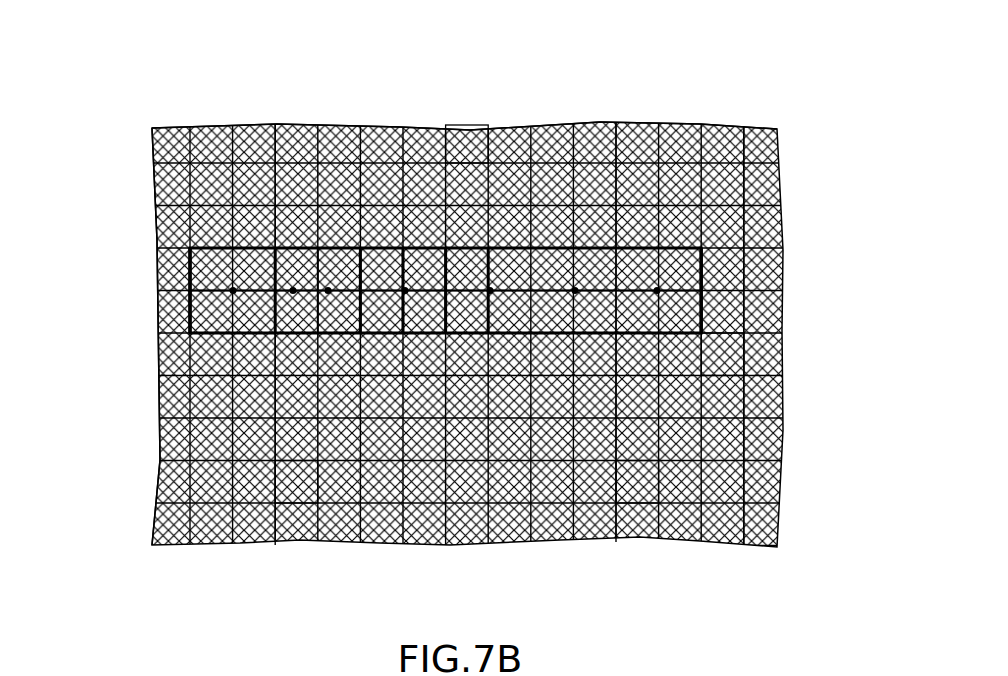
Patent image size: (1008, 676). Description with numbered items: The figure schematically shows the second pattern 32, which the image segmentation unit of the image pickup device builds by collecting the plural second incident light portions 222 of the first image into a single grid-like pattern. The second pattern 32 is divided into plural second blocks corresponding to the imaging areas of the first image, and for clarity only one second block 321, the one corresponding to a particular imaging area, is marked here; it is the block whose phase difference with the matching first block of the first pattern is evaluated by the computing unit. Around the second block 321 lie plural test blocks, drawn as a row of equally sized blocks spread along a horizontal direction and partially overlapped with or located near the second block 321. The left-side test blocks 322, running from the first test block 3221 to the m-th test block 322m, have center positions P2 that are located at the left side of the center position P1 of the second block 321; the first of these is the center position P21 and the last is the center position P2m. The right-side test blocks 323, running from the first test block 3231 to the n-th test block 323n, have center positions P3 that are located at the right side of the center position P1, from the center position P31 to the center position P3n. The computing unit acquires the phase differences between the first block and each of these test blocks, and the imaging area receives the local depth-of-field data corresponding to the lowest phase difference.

The second pattern 32 is at (584, 66).
The second block 321 is at (400, 125).
The test blocks 322 is at (174, 320).
The first test block 3221 is at (277, 122).
The m-th test block 322m is at (157, 180).
The test blocks 323 is at (721, 313).
The first test block 3231 is at (597, 122).
The n-th test block 323n is at (748, 153).
The second incident light portions 222 is at (473, 128).
The center position of the second block P1 is at (405, 337).
The center positions of the left test blocks P2 is at (142, 421).
The center position of the first left test block P21 is at (190, 336).
The center position of the m-th left test block P2m is at (190, 334).
The center positions of the right test blocks P3 is at (768, 421).
The center position of the first right test block P31 is at (705, 336).
The center position of the n-th right test block P3n is at (705, 268).